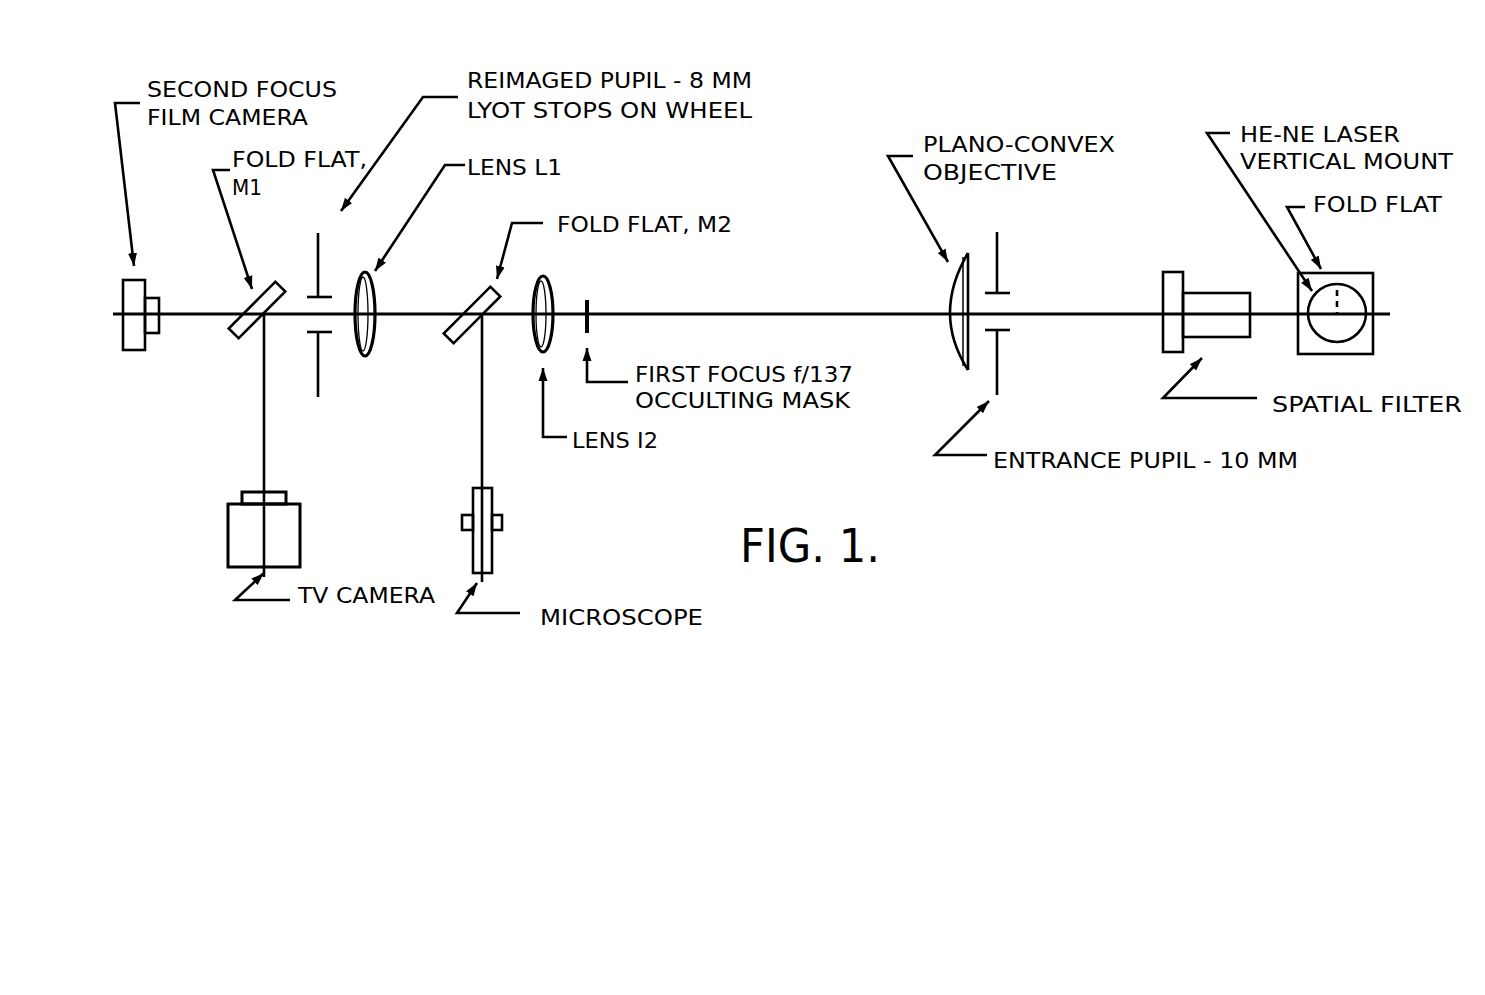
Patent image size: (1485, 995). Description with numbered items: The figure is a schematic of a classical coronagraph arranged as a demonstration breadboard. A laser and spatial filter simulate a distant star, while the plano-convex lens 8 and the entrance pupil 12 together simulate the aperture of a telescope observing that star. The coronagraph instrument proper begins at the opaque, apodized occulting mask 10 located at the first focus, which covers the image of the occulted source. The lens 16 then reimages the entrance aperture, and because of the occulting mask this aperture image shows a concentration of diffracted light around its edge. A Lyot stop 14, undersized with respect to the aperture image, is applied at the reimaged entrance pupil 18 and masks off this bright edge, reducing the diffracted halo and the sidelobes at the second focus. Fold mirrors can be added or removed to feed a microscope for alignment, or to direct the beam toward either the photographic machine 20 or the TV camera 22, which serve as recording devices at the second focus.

The lens 8 is at (955, 350).
The occulting mask 10 is at (588, 300).
The entrance pupil 12 is at (997, 365).
The Lyot stop 14 is at (320, 252).
The lens 16 is at (535, 347).
The entrance pupil 18 is at (377, 335).
The photographic machine 20 is at (160, 327).
The camera 22 is at (302, 502).